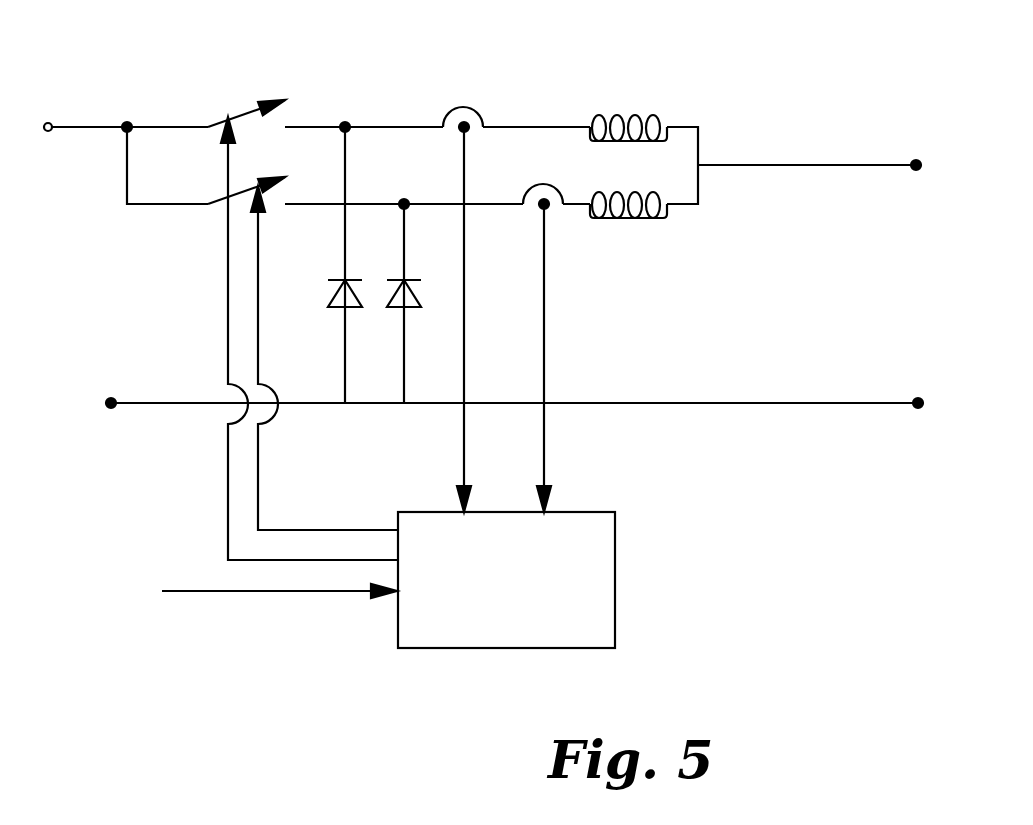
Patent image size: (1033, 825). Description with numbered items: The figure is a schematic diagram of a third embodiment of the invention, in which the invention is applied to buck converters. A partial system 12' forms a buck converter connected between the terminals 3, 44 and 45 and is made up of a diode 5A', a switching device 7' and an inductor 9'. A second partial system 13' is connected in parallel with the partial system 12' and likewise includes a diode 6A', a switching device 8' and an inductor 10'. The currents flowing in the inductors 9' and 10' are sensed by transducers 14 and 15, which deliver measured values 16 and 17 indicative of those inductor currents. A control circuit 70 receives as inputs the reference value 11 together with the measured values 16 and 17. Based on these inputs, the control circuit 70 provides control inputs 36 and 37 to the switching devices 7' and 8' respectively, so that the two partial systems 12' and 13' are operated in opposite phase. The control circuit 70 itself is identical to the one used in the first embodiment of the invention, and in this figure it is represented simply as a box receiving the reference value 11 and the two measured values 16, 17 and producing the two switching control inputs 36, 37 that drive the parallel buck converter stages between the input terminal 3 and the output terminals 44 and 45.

The terminal 3 is at (48, 122).
The partial system 12' is at (207, 71).
The switching device 7' is at (270, 71).
The switching device 8' is at (287, 183).
The partial system 13' is at (219, 226).
The transducer 14 is at (464, 106).
The transducer 15 is at (544, 184).
The inductor 9' is at (630, 103).
The inductor 10' is at (645, 233).
The terminal 44 is at (916, 170).
The terminal 45 is at (917, 397).
The diode 5A' is at (321, 262).
The diode 6A' is at (355, 301).
The measured value 16 is at (464, 323).
The measured value 17 is at (545, 355).
The control input 36 is at (228, 355).
The control input 37 is at (260, 495).
The reference value 11 is at (186, 590).
The control circuit 70 is at (617, 598).